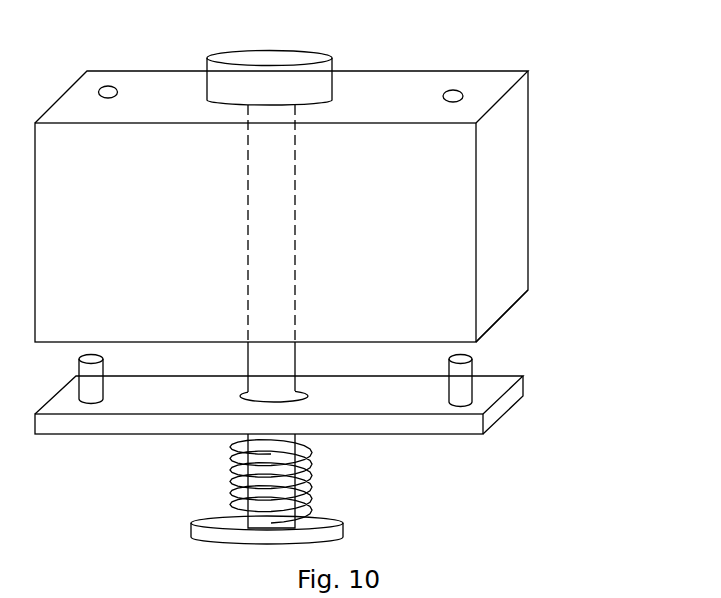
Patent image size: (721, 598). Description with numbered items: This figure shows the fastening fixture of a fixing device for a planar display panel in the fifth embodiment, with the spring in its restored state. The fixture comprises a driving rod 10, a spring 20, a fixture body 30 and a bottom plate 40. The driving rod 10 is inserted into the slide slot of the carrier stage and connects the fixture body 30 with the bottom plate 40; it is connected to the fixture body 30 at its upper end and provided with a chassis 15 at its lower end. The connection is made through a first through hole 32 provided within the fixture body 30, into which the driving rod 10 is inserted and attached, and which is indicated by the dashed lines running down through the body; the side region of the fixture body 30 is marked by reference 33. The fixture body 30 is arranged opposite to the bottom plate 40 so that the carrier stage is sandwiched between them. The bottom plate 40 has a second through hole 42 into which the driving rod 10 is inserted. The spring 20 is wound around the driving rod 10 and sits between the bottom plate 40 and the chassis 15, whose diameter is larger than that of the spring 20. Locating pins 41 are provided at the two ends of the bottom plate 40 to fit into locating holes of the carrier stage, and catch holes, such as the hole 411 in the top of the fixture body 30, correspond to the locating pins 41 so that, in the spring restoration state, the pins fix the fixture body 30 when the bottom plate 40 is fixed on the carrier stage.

The driving rod 10 is at (280, 370).
The chassis 15 is at (322, 535).
The spring 20 is at (310, 497).
The fixture body 30 is at (488, 183).
The first through hole 32 is at (295, 130).
The block side edge 33 is at (472, 315).
The bottom plate 40 is at (493, 415).
The locating pins 41 is at (462, 390).
The hole 411 is at (462, 93).
The second through hole 42 is at (248, 393).